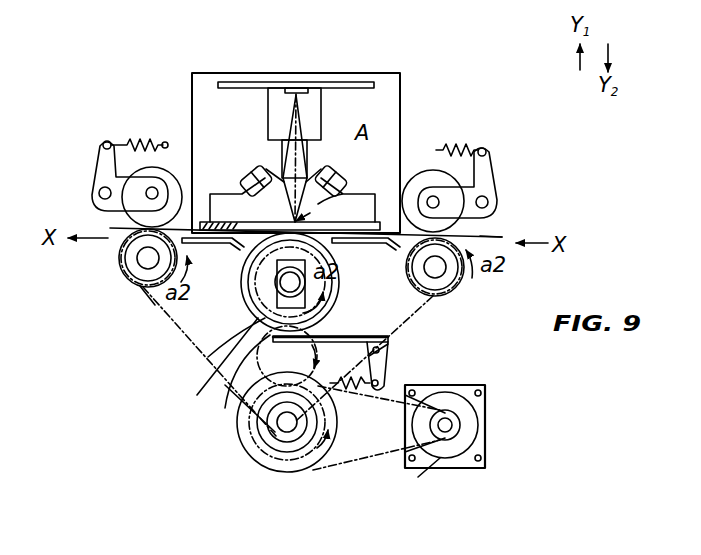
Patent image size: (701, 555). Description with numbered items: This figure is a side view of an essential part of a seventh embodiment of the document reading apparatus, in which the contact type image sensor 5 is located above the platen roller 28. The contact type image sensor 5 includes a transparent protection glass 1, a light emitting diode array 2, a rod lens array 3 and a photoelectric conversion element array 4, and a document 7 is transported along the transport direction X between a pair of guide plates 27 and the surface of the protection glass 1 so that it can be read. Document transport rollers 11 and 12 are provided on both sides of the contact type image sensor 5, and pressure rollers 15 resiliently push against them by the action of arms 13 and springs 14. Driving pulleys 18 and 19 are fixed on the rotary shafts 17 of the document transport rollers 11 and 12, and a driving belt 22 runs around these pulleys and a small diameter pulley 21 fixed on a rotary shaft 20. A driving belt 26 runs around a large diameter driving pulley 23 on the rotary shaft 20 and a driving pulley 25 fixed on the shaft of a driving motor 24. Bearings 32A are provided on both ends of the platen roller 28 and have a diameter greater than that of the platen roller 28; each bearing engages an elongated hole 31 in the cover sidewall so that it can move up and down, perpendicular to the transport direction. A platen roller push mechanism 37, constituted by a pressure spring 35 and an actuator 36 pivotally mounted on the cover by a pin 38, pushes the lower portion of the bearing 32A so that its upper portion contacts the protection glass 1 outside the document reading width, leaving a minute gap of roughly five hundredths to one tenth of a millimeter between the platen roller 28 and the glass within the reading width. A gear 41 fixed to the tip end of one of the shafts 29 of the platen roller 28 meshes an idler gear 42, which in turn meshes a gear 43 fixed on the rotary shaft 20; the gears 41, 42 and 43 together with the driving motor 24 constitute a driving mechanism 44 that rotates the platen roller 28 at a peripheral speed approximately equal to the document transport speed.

The protection glass 1 is at (399, 233).
The light emitting diode array 2 is at (256, 165).
The rod lens array 3 is at (330, 125).
The photoelectric conversion element array 4 is at (312, 96).
The contact type image sensor 5 is at (222, 108).
The document 7 is at (490, 238).
The document transport roller 11 is at (452, 293).
The document transport roller 12 is at (125, 275).
The arm 13 is at (98, 166).
The spring 14 is at (125, 142).
The pressure roller 15 is at (118, 213).
The rotary shaft 17 is at (146, 258).
The driving pulley 18 is at (418, 318).
The driving pulley 19 is at (152, 288).
The rotary shaft 20 is at (287, 424).
The small diameter pulley 21 is at (262, 436).
The driving belt 22 is at (190, 338).
The large diameter driving pulley 23 is at (298, 440).
The driving motor 24 is at (485, 396).
The driving pulley 25 is at (462, 438).
The driving belt 26 is at (386, 455).
The guide plate 27 is at (190, 225).
The platen roller 28 is at (215, 370).
The shaft 29 is at (288, 282).
The elongated hole 31 is at (262, 385).
The bearing 32A is at (272, 298).
The pressure spring 35 is at (355, 388).
The actuator 36 is at (349, 336).
The platen roller push mechanism 37 is at (394, 366).
The pin 38 is at (379, 342).
The gear 41 is at (215, 360).
The idler gear 42 is at (245, 455).
The gear 43 is at (325, 462).
The driving mechanism 44 is at (418, 478).